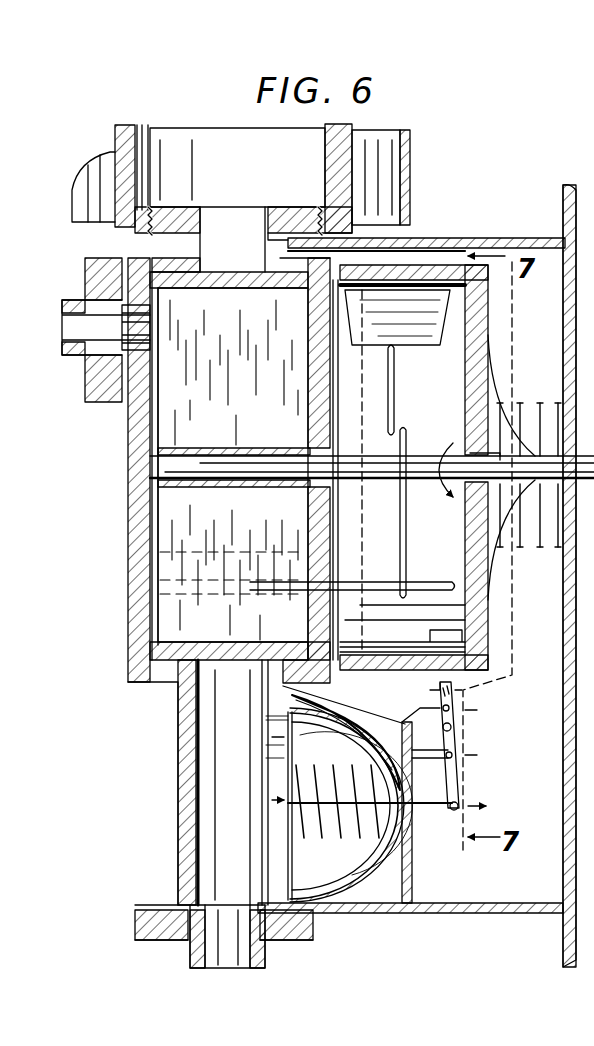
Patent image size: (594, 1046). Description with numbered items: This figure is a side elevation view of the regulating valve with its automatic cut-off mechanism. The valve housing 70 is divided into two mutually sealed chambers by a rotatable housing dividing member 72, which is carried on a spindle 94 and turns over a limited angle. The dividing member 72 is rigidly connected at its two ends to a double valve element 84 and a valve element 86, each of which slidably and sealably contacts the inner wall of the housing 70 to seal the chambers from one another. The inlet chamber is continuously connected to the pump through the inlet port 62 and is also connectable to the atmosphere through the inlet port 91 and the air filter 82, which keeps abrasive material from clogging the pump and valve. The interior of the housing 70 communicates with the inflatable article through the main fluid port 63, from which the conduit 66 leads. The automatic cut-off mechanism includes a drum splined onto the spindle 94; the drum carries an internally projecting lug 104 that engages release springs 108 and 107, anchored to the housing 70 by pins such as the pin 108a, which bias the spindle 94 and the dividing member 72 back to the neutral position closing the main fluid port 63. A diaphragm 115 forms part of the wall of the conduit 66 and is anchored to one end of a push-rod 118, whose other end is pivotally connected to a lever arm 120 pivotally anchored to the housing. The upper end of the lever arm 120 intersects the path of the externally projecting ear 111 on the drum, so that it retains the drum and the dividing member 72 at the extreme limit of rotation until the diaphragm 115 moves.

The air filter 82 is at (164, 128).
The inlet port 91 is at (200, 242).
The double valve element 84 is at (248, 290).
The inlet port 62 is at (155, 348).
The housing dividing member 72 is at (271, 424).
The valve housing 70 is at (135, 490).
The valve element 86 is at (212, 650).
The main fluid port 63 is at (196, 688).
The conduit 66 is at (192, 792).
The diaphragm 115 is at (286, 758).
The internally projecting lug 104 is at (428, 305).
The release spring 108 is at (395, 395).
The spindle 94 is at (387, 480).
The release spring 107 is at (406, 549).
The pin 108a is at (355, 576).
The externally projecting ear 111 is at (463, 691).
The lever arm 120 is at (455, 776).
The push-rod 118 is at (428, 820).